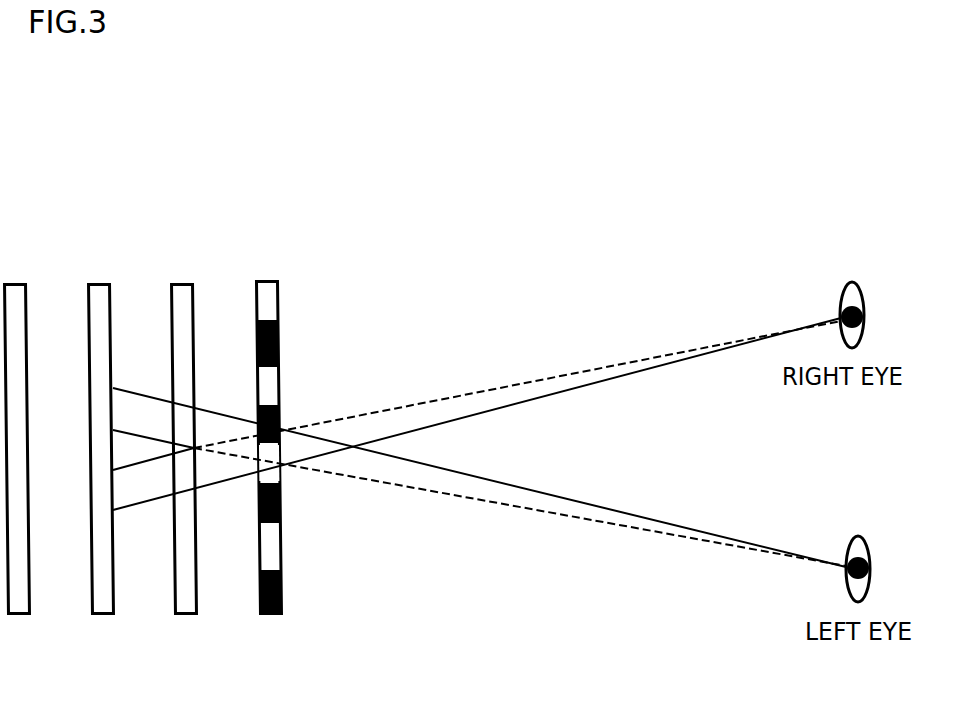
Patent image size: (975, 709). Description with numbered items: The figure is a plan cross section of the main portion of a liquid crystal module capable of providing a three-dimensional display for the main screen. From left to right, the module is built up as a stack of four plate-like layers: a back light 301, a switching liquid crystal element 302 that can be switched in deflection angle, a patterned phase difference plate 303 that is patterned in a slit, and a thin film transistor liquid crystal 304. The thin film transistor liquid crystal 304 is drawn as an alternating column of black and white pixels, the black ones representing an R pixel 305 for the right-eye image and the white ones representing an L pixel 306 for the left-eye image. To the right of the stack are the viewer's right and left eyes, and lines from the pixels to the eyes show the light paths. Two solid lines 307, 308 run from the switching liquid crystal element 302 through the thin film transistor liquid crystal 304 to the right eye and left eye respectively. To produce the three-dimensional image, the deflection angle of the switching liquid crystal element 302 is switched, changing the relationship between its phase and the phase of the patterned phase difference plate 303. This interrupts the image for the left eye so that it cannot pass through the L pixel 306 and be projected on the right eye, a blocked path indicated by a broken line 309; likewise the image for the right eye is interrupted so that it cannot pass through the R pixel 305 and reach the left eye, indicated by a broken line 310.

The back light 301 is at (5, 282).
The switching liquid crystal element 302 is at (90, 282).
The patterned phase difference plate 303 is at (172, 282).
The thin film transistor (TFT) liquid crystal 304 is at (257, 280).
The R pixel 305 is at (268, 424).
The L pixel 306 is at (269, 463).
The light ray toward right eye 307 is at (573, 387).
The light ray toward left eye 308 is at (537, 490).
The broken line 309 is at (582, 368).
The broken line 310 is at (543, 510).